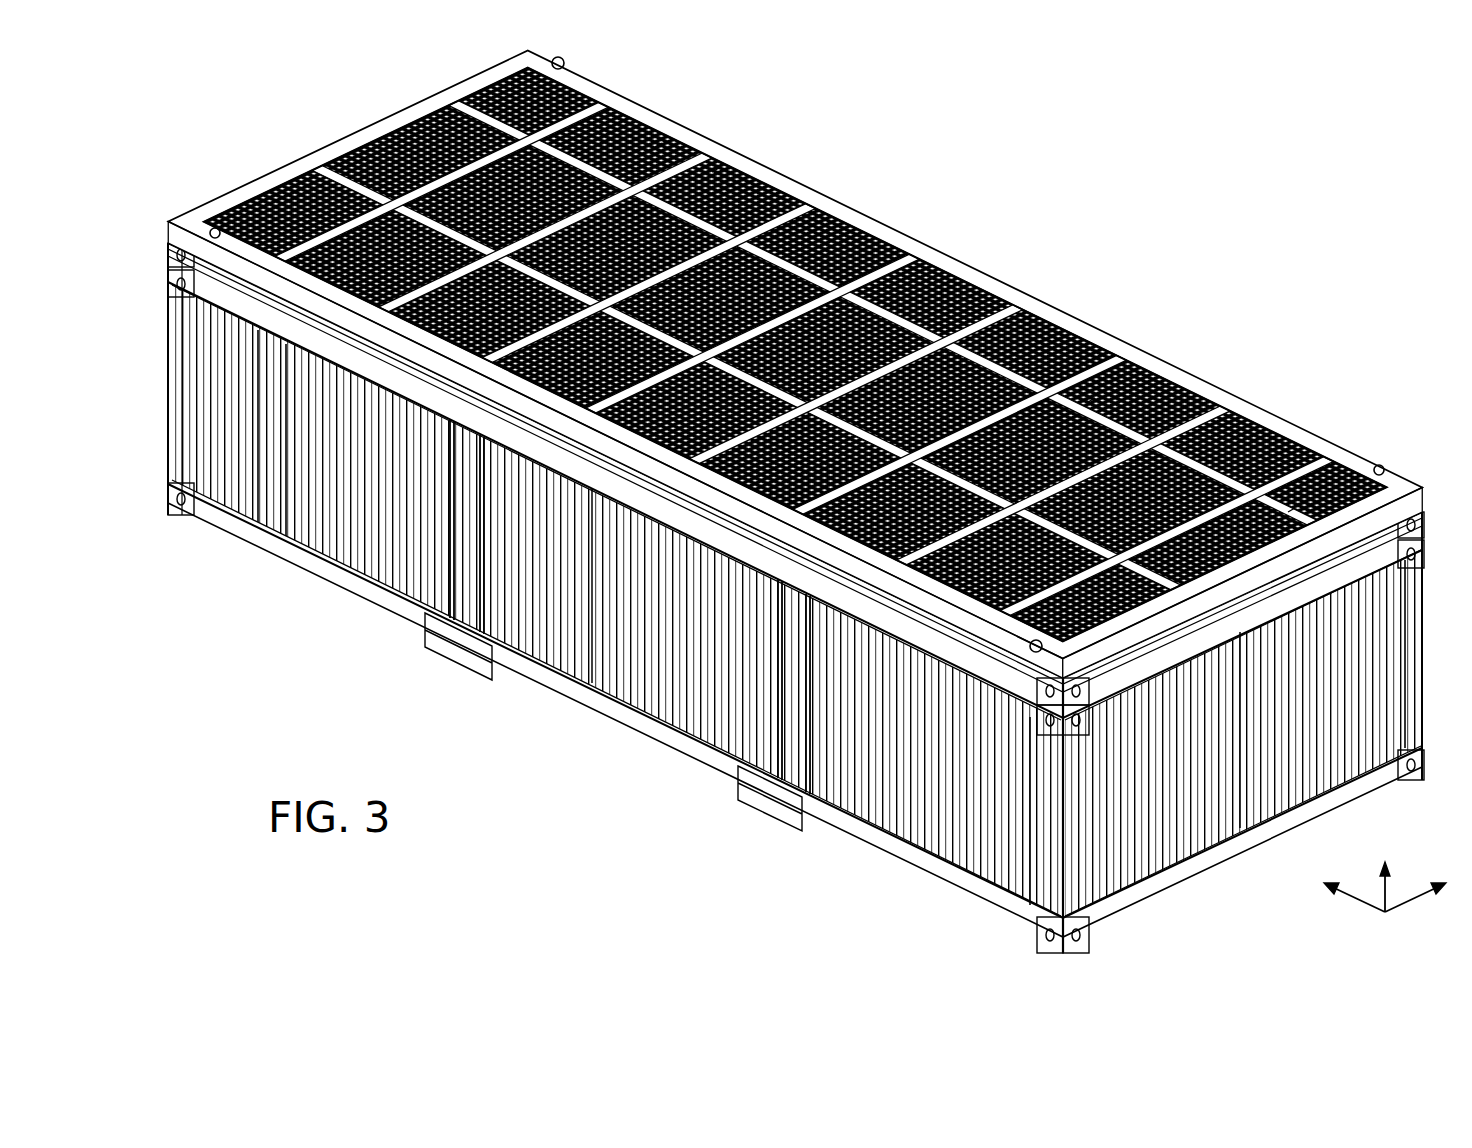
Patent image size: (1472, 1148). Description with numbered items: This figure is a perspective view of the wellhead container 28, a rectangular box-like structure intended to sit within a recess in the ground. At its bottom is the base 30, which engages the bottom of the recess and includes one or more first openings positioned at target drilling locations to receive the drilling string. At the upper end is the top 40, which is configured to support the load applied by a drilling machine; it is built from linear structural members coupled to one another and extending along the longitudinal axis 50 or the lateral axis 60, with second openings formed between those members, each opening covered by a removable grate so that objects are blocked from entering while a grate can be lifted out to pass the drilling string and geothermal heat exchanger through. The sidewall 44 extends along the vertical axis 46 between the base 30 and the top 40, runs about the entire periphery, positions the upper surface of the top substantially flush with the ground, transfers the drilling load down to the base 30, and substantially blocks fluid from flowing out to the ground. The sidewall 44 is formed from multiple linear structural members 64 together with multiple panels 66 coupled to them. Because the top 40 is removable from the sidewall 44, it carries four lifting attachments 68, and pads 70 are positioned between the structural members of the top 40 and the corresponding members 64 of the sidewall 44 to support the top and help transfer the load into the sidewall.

The wellhead container 28 is at (836, 186).
The base 30 is at (403, 633).
The top 40 is at (978, 253).
The sidewall 44 is at (210, 406).
The vertical axis 46 is at (1386, 890).
The longitudinal axis 50 is at (1408, 902).
The lateral axis 60 is at (1362, 902).
The linear structural members 64 is at (232, 312).
The panels 66 is at (655, 678).
The lifting attachments 68 is at (210, 232).
The pads 70 is at (590, 472).